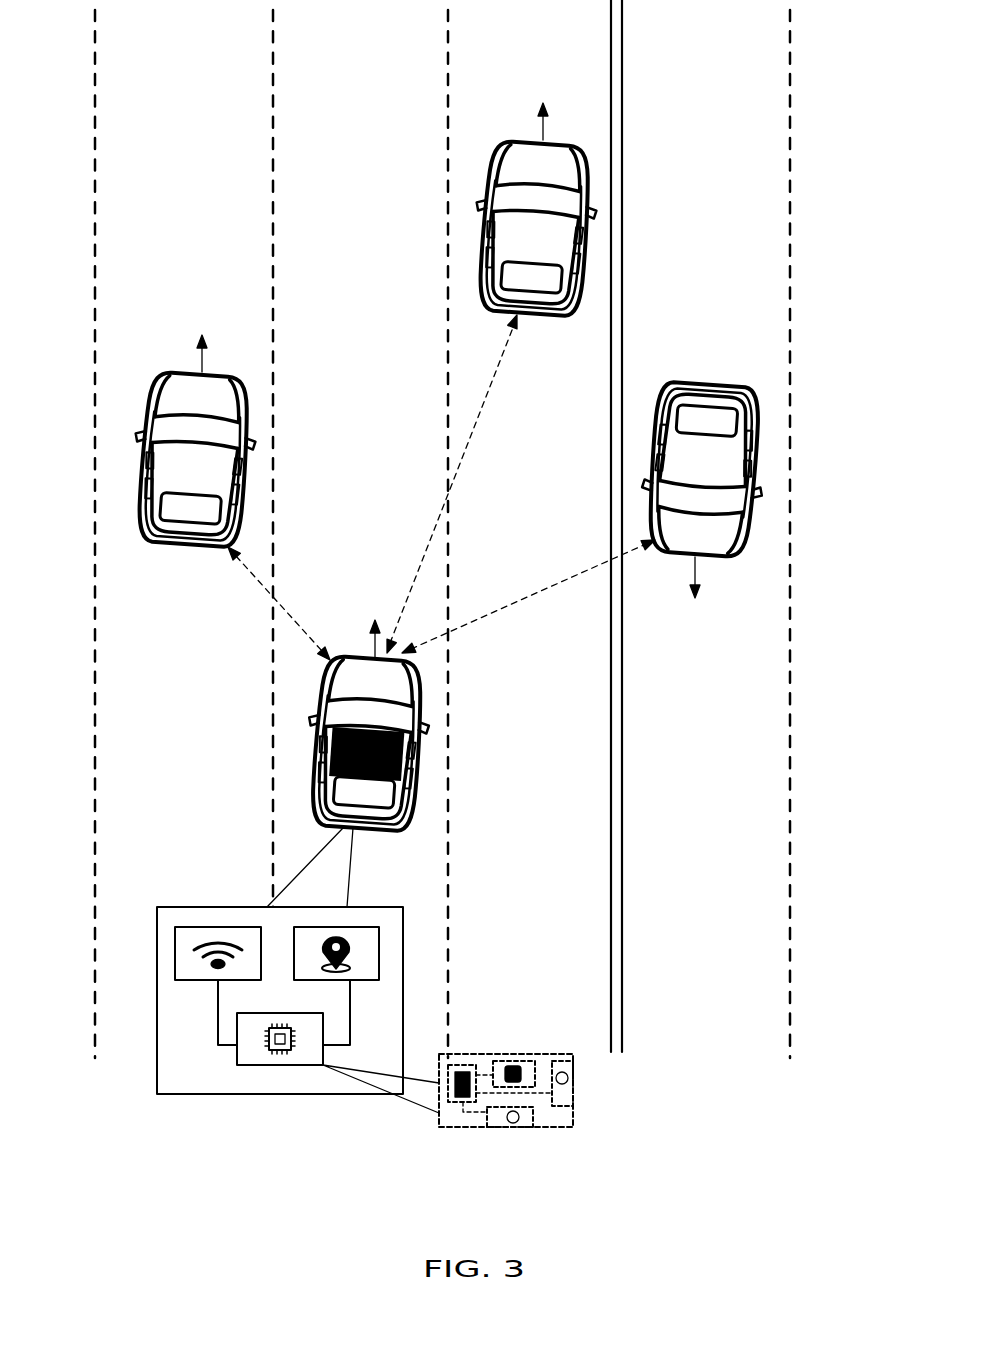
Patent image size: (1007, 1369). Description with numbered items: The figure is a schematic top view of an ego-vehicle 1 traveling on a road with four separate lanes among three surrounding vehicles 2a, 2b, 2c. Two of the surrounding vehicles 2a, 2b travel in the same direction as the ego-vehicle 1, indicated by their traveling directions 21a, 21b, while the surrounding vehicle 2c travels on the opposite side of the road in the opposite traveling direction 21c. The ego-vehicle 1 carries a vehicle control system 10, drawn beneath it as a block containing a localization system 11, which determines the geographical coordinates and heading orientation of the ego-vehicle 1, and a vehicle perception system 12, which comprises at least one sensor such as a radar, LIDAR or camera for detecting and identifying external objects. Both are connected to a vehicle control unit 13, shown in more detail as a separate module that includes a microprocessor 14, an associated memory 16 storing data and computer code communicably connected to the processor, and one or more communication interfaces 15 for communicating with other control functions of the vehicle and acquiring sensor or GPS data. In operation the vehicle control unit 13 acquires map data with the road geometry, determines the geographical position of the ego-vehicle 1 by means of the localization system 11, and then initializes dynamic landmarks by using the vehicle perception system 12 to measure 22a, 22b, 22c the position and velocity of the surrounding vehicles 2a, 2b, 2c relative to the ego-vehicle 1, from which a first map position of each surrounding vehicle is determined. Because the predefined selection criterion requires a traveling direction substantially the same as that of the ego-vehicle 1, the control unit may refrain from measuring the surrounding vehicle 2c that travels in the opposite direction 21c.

The ego-vehicle 1 is at (407, 757).
The surrounding vehicle 2a is at (145, 466).
The surrounding vehicle 2b is at (567, 242).
The surrounding vehicle 2c is at (755, 432).
The vehicle control system 10 is at (403, 925).
The localization system 11 is at (364, 927).
The vehicle perception system 12 is at (218, 927).
The vehicle control unit 13 is at (237, 1057).
The microprocessor 14 is at (462, 1065).
The communication interface 15 is at (562, 1061).
The memory 16 is at (517, 1061).
The traveling direction 21a is at (200, 370).
The traveling direction 21b is at (541, 139).
The traveling direction 21c is at (698, 576).
The measurement 22a is at (290, 615).
The measurement 22b is at (478, 418).
The measurement 22c is at (563, 583).